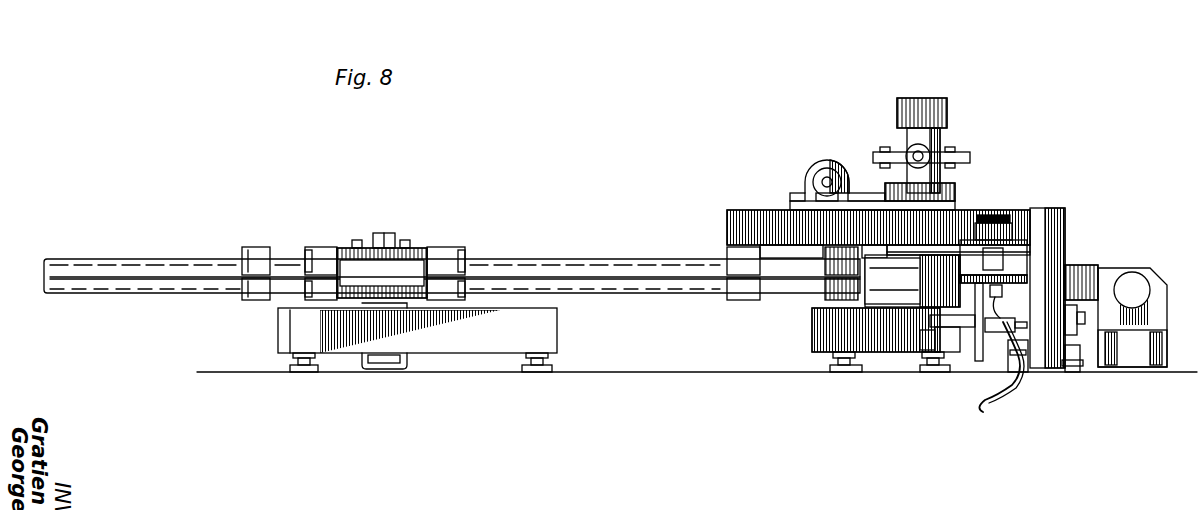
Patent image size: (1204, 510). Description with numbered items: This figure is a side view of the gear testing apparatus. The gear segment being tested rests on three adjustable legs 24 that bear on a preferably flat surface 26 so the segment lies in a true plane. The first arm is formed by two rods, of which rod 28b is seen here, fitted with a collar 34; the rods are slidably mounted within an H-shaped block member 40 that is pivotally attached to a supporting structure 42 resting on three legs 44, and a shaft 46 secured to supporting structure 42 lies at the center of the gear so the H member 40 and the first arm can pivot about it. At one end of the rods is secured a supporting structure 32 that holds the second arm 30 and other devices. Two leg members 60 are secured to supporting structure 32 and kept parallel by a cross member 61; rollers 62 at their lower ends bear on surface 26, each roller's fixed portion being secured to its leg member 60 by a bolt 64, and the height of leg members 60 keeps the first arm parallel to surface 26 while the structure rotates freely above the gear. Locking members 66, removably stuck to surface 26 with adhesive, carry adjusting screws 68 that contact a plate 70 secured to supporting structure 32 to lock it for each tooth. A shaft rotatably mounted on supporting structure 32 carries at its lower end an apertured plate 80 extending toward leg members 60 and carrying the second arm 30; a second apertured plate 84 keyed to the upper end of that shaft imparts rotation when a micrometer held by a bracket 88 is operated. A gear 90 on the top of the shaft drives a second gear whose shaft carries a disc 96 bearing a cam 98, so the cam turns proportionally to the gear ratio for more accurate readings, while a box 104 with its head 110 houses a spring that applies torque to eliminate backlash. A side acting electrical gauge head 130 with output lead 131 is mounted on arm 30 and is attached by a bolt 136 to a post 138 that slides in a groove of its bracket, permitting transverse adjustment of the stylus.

The adjustable legs 24 is at (930, 373).
The flat surface 26 is at (676, 373).
The rod 28b is at (160, 272).
The second arm 30 is at (1000, 255).
The supporting structure 32 is at (737, 218).
The collar 34 is at (256, 250).
The H-shaped block member 40 is at (445, 252).
The supporting structure 42 is at (543, 330).
The legs 44 is at (303, 373).
The shaft 46 is at (395, 234).
The leg members 60 is at (1058, 222).
The cross member 61 is at (1072, 322).
The rollers 62 is at (1022, 373).
The bolt 64 is at (1072, 373).
The locking members 66 is at (1155, 308).
The adjusting screws 68 is at (1138, 285).
The plate 70 is at (1102, 275).
The apertured plate 80 is at (908, 263).
The second apertured plate 84 is at (858, 193).
The bracket 88 is at (810, 180).
The gear 90 is at (948, 175).
The disc 96 is at (950, 164).
The cam 98 is at (965, 157).
The box 104 is at (940, 115).
The head 110 is at (920, 100).
The side acting electrical gauge head 130 is at (1023, 315).
The output lead 131 is at (1002, 373).
The bolt 136 is at (1002, 325).
The post 138 is at (1000, 290).